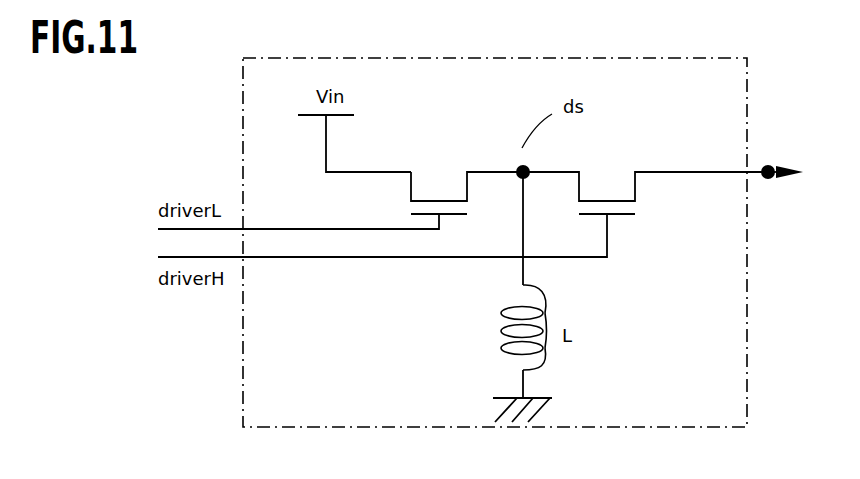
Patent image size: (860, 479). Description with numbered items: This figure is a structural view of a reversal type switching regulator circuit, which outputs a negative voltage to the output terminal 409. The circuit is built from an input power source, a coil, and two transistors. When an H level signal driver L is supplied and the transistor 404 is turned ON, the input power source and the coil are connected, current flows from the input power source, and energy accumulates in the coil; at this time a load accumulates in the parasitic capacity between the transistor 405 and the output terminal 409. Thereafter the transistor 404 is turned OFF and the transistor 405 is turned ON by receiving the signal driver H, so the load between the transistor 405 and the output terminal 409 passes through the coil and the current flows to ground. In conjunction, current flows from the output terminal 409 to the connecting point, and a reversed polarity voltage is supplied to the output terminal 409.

The transistor 404 is at (424, 171).
The transistor 405 is at (593, 172).
The output terminal 409 is at (770, 158).